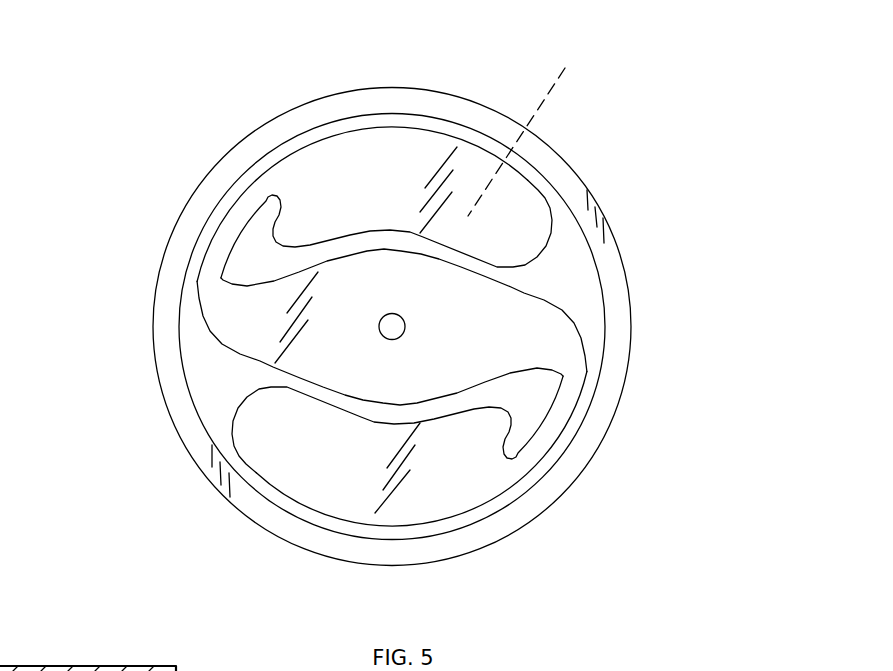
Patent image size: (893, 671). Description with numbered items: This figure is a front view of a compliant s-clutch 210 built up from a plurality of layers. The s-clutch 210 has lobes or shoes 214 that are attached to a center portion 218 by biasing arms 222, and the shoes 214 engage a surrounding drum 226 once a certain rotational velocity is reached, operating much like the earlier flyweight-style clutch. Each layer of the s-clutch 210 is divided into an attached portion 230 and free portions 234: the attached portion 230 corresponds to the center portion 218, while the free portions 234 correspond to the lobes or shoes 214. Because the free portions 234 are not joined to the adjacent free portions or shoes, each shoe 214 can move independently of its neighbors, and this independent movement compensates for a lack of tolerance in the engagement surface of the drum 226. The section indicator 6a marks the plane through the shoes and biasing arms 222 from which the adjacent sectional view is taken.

The s-clutch 210 is at (571, 497).
The lobes or shoes 214 is at (433, 488).
The center portion 218 is at (446, 343).
The biasing arms 222 is at (560, 415).
The drum 226 is at (609, 256).
The attached portion 230 is at (242, 323).
The free portions 234 is at (320, 180).
The section line 6a is at (552, 58).